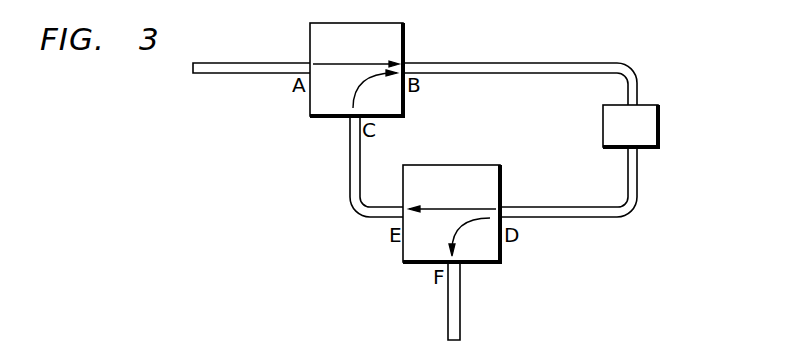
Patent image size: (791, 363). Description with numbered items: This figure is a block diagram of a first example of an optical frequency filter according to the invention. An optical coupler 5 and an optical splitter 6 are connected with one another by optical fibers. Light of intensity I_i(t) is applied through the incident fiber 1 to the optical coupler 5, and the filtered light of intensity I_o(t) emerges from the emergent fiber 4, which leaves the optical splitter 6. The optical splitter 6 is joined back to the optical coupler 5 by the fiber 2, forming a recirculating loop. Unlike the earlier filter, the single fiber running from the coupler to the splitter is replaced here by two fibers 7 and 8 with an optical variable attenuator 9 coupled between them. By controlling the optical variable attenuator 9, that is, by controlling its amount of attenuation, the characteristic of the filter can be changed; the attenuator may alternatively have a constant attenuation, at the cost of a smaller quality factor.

The incident fiber 1 is at (232, 74).
The optical fiber 2 is at (349, 196).
The emergent fiber 4 is at (461, 308).
The optical coupler 5 is at (404, 35).
The optical splitter 6 is at (501, 177).
The optical fiber 7 is at (560, 62).
The optical fiber 8 is at (638, 204).
The optical variable attenuator 9 is at (659, 115).